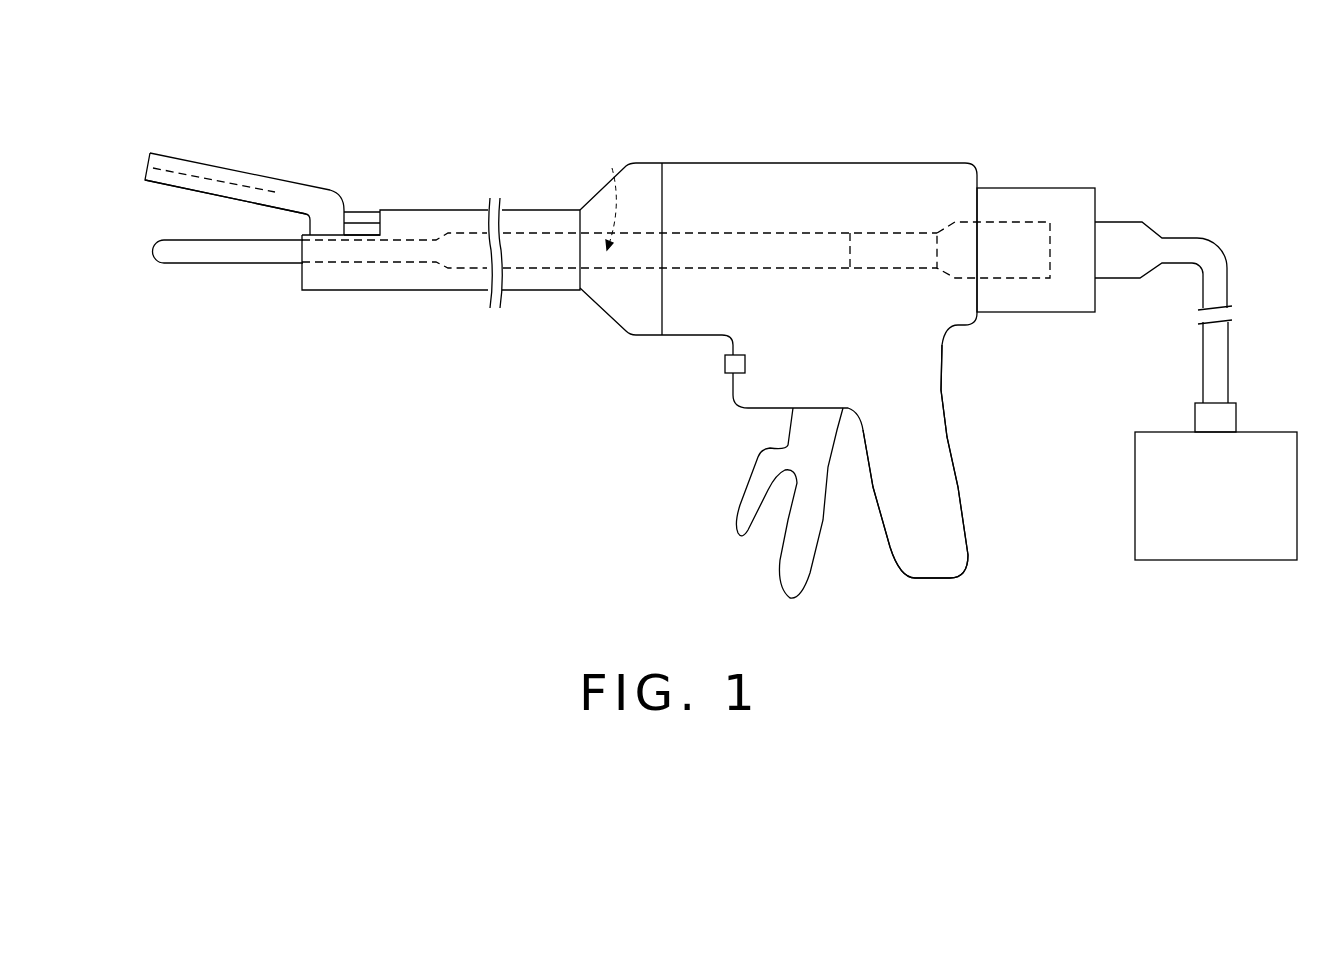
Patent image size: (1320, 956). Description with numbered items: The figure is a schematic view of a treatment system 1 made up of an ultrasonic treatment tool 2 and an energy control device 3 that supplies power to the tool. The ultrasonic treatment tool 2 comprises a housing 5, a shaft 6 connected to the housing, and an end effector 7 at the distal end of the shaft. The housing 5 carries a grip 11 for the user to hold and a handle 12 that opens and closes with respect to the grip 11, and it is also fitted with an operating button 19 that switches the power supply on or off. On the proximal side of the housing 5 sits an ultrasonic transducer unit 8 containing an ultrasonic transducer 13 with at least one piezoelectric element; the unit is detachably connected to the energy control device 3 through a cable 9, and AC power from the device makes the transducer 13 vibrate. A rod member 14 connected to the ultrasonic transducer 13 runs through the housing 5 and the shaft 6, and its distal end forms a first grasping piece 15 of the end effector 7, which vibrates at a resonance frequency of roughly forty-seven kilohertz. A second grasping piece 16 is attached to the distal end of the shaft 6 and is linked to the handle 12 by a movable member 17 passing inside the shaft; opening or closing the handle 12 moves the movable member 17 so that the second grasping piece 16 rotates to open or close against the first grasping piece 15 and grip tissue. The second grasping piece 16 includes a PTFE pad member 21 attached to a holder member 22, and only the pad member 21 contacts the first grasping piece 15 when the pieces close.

The treatment system 1 is at (1003, 60).
The ultrasonic treatment tool 2 is at (657, 150).
The energy control device 3 is at (1280, 431).
The housing 5 is at (885, 158).
The shaft 6 is at (538, 209).
The end effector 7 is at (119, 170).
The ultrasonic transducer unit 8 is at (1005, 187).
The cable 9 is at (1126, 237).
The grip 11 is at (945, 443).
The handle 12 is at (810, 555).
The ultrasonic transducer 13 is at (1033, 282).
The rod member 14 is at (611, 193).
The first grasping piece 15 is at (227, 262).
The second grasping piece 16 is at (243, 163).
The movable member 17 is at (360, 211).
The operating button 19 is at (724, 363).
The pad member 21 is at (188, 192).
The holder member 22 is at (188, 170).